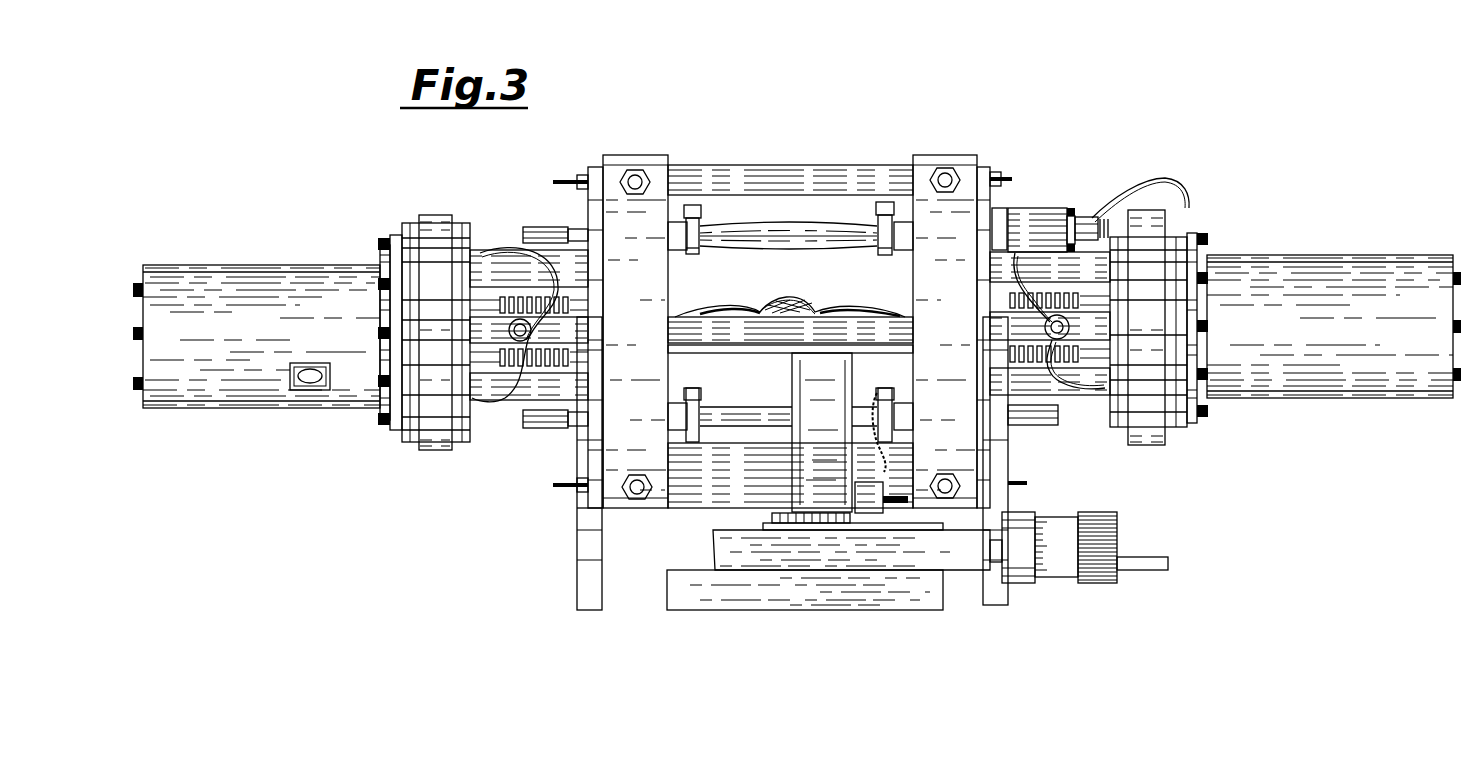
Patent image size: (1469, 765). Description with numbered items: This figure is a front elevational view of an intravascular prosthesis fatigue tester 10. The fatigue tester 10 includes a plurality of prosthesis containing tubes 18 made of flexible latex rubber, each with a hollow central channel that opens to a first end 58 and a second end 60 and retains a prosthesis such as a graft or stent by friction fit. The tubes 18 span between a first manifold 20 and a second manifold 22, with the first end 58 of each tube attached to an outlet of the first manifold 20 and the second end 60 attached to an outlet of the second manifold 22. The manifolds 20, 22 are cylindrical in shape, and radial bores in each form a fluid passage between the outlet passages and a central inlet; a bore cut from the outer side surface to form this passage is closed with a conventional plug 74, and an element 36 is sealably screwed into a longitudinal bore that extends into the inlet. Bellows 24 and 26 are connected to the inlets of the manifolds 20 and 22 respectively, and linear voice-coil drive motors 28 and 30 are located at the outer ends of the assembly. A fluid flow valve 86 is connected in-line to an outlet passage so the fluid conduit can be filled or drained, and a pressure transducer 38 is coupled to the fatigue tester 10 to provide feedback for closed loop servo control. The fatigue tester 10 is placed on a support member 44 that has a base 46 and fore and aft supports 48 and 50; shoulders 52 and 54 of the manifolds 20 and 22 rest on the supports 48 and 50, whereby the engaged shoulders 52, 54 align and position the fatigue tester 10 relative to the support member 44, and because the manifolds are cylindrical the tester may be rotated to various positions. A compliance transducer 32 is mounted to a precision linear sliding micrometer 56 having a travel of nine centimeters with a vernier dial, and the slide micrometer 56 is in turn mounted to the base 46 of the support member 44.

The fatigue tester 10 is at (1240, 206).
The prosthesis containing tube 18 is at (806, 246).
The first manifold 20 is at (630, 155).
The second manifold 22 is at (927, 155).
The bellows 24 is at (525, 305).
The bellows 26 is at (1063, 292).
The linear voice-coil drive motor 28 is at (435, 455).
The linear voice-coil drive motor 30 is at (1149, 456).
The compliance transducer 32 is at (810, 493).
The element 36 is at (675, 312).
The pressure transducer 38 is at (1073, 208).
The support member 44 is at (558, 594).
The base 46 is at (612, 525).
The fore support 48 is at (1000, 441).
The aft support 50 is at (583, 509).
The shoulder 52 is at (599, 168).
The shoulder 54 is at (982, 170).
The precision linear sliding micrometer 56 is at (915, 546).
The first end 58 is at (684, 205).
The second end 60 is at (910, 215).
The plug 74 is at (945, 177).
The fluid flow valve 86 is at (1037, 208).